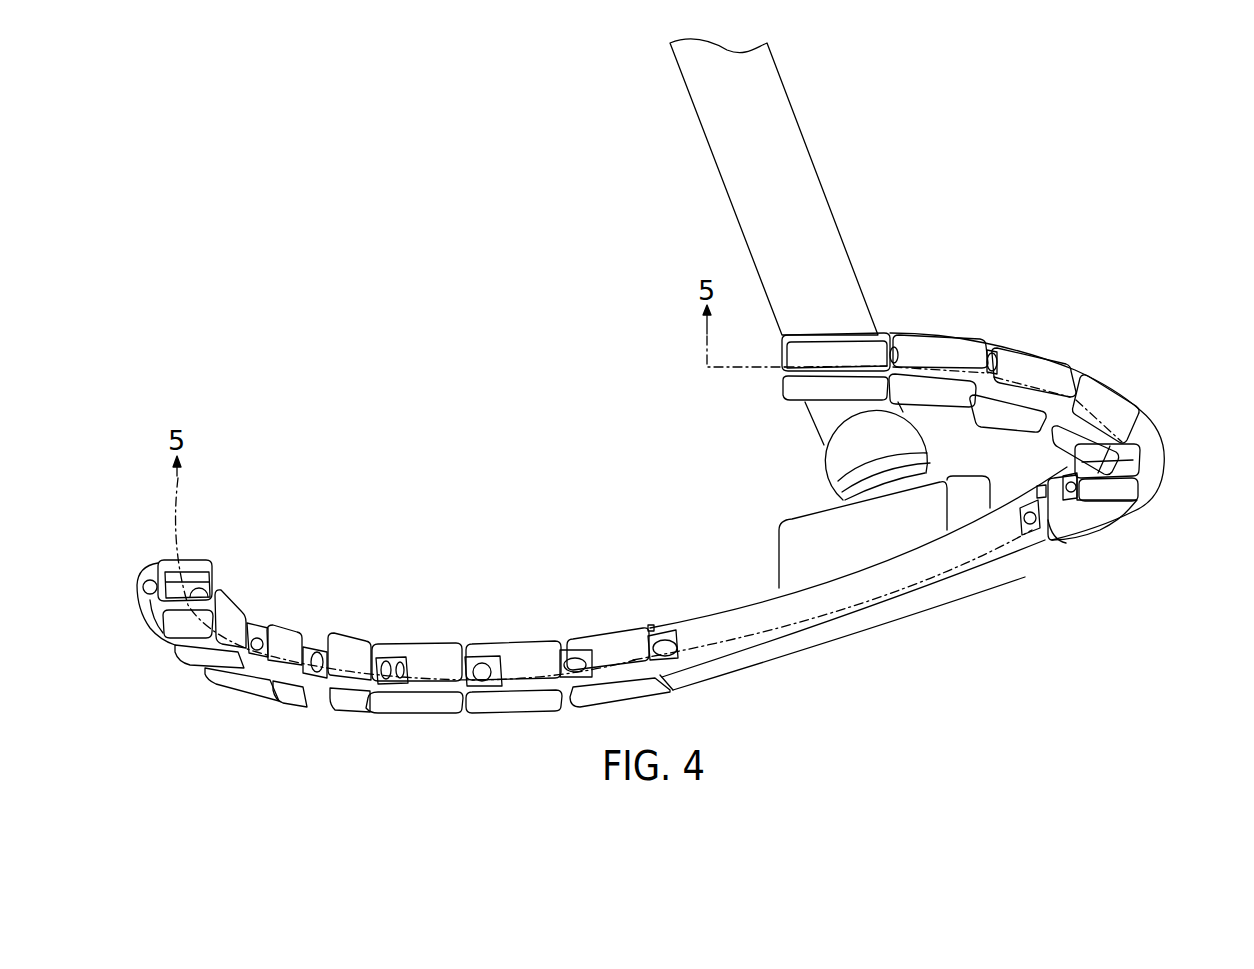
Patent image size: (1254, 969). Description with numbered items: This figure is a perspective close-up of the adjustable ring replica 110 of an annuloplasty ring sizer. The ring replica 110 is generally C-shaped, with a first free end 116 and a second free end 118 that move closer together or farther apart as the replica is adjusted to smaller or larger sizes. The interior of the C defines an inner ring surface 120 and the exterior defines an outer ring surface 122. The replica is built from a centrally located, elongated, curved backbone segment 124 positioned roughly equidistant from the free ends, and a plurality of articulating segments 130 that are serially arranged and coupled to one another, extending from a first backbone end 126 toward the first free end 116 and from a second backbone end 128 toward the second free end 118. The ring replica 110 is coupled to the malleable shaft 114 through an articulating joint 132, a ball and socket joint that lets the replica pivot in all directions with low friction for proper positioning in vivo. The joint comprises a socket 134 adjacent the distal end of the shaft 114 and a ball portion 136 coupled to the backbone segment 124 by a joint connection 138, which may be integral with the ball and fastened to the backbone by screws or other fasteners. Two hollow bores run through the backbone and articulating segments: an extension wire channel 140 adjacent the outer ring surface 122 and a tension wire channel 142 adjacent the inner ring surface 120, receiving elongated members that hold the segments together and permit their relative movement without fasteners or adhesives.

The adjustable ring replica 110 is at (1108, 350).
The malleable shaft 114 is at (800, 172).
The first free end 116 is at (783, 366).
The second free end 118 is at (198, 560).
The inner ring surface 120 is at (428, 657).
The outer ring surface 122 is at (1158, 470).
The backbone segment 124 is at (833, 637).
The first backbone end 126 is at (1062, 542).
The second backbone end 128 is at (650, 627).
The articulating segments 130 is at (930, 340).
The articulating joint 132 is at (863, 455).
The socket 134 is at (918, 440).
The ball portion 136 is at (912, 468).
The joint connection 138 is at (793, 572).
The extension wire channel 140 is at (995, 362).
The tension wire channel 142 is at (258, 636).